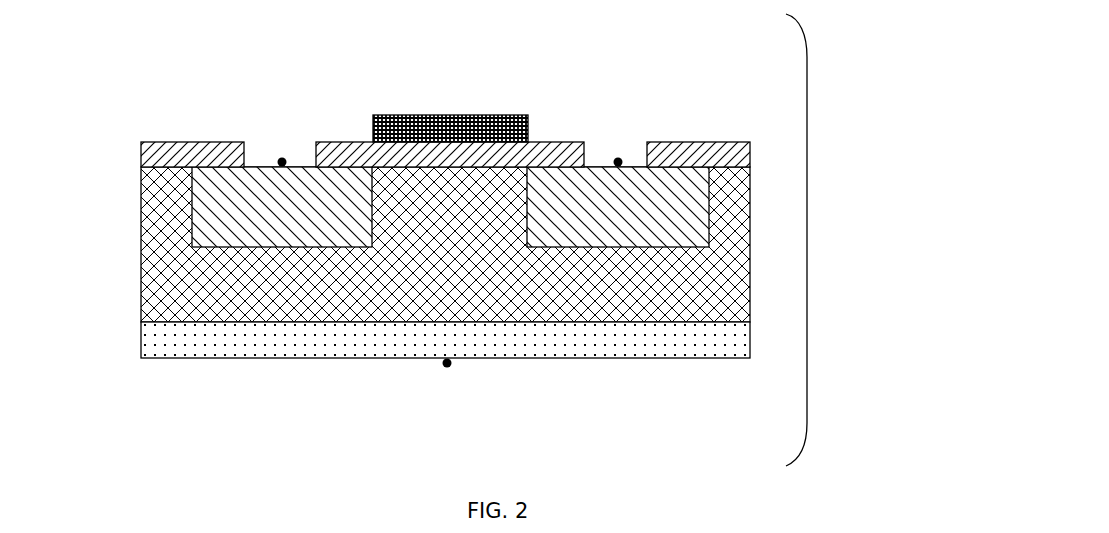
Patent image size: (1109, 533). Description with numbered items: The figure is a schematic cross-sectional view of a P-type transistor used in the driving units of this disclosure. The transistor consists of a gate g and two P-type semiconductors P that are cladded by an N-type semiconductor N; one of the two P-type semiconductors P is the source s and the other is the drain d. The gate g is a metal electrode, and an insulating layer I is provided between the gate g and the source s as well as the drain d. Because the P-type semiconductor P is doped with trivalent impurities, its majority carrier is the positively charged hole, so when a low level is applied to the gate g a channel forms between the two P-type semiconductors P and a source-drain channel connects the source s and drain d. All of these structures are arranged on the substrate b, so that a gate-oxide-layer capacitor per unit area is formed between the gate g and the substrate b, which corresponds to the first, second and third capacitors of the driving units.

The N-type semiconductor N is at (155, 273).
The P-type semiconductor P is at (218, 187).
The insulating layer I is at (149, 160).
The gate g is at (451, 110).
The source s is at (282, 162).
The drain d is at (618, 162).
The substrate b is at (447, 363).